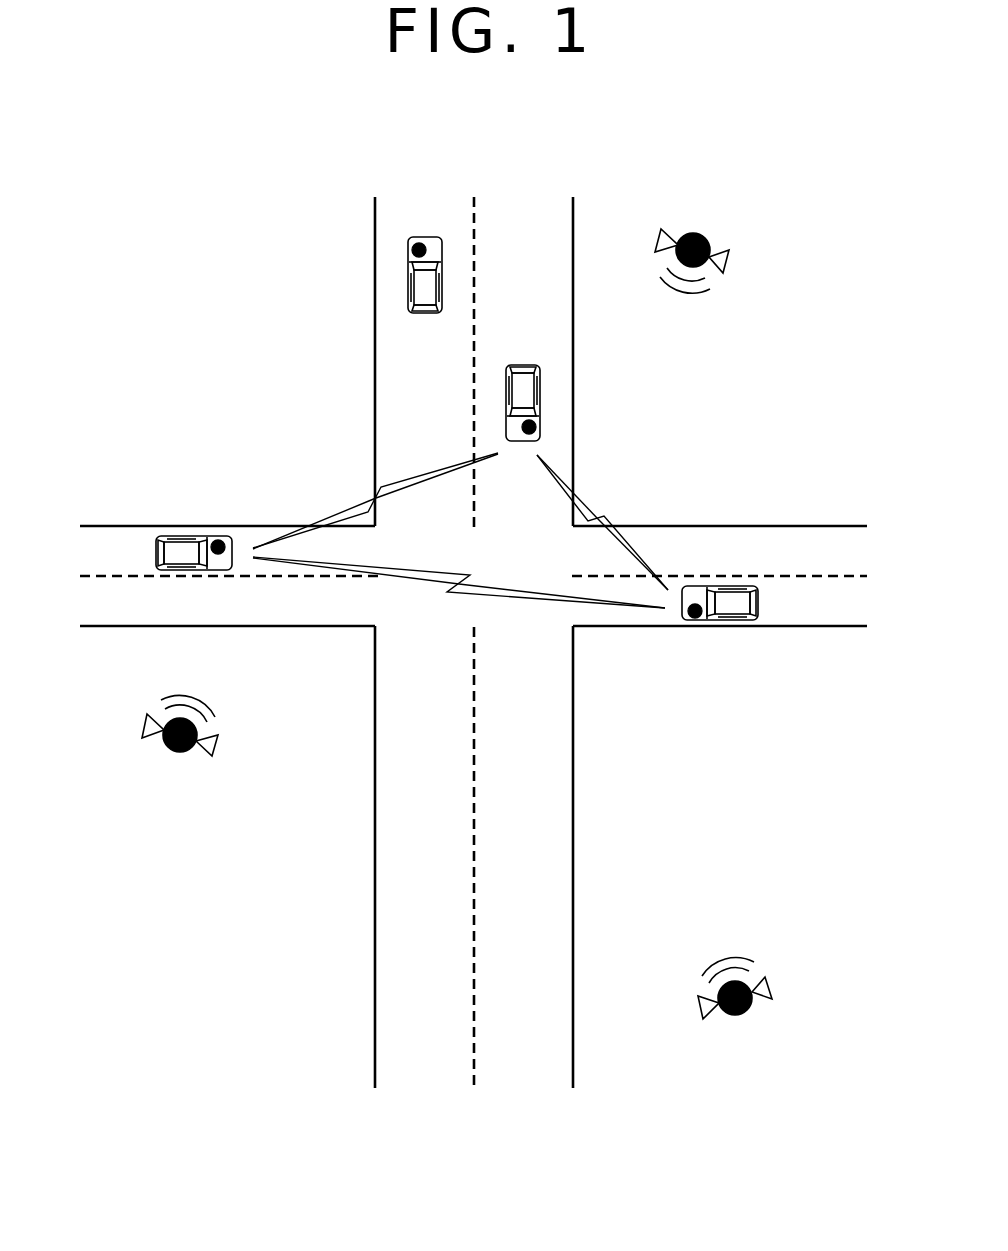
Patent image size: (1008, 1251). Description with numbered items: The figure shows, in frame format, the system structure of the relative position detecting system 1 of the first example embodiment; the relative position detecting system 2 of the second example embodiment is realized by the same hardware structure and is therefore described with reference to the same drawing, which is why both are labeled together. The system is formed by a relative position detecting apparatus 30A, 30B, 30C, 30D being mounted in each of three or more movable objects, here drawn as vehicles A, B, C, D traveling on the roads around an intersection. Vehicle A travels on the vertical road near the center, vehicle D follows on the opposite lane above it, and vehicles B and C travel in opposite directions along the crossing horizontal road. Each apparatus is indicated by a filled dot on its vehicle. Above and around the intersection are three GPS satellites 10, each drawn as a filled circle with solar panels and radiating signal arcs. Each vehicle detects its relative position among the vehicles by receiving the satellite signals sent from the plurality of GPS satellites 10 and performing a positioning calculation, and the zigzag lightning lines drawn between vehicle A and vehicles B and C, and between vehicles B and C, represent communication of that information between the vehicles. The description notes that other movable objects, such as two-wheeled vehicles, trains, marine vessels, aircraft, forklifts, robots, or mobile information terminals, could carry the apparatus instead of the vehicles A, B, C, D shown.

The relative position detecting system 1 is at (473, 606).
The relative position detecting system 2 is at (141, 155).
The GPS satellite 10 is at (476, 632).
The vehicle A is at (538, 393).
The vehicle B is at (182, 539).
The vehicle C is at (733, 618).
The vehicle D is at (409, 280).
The relative position detecting apparatus 30A is at (535, 428).
The relative position detecting apparatus 30B is at (217, 540).
The relative position detecting apparatus 30C is at (697, 618).
The relative position detecting apparatus 30D is at (412, 249).